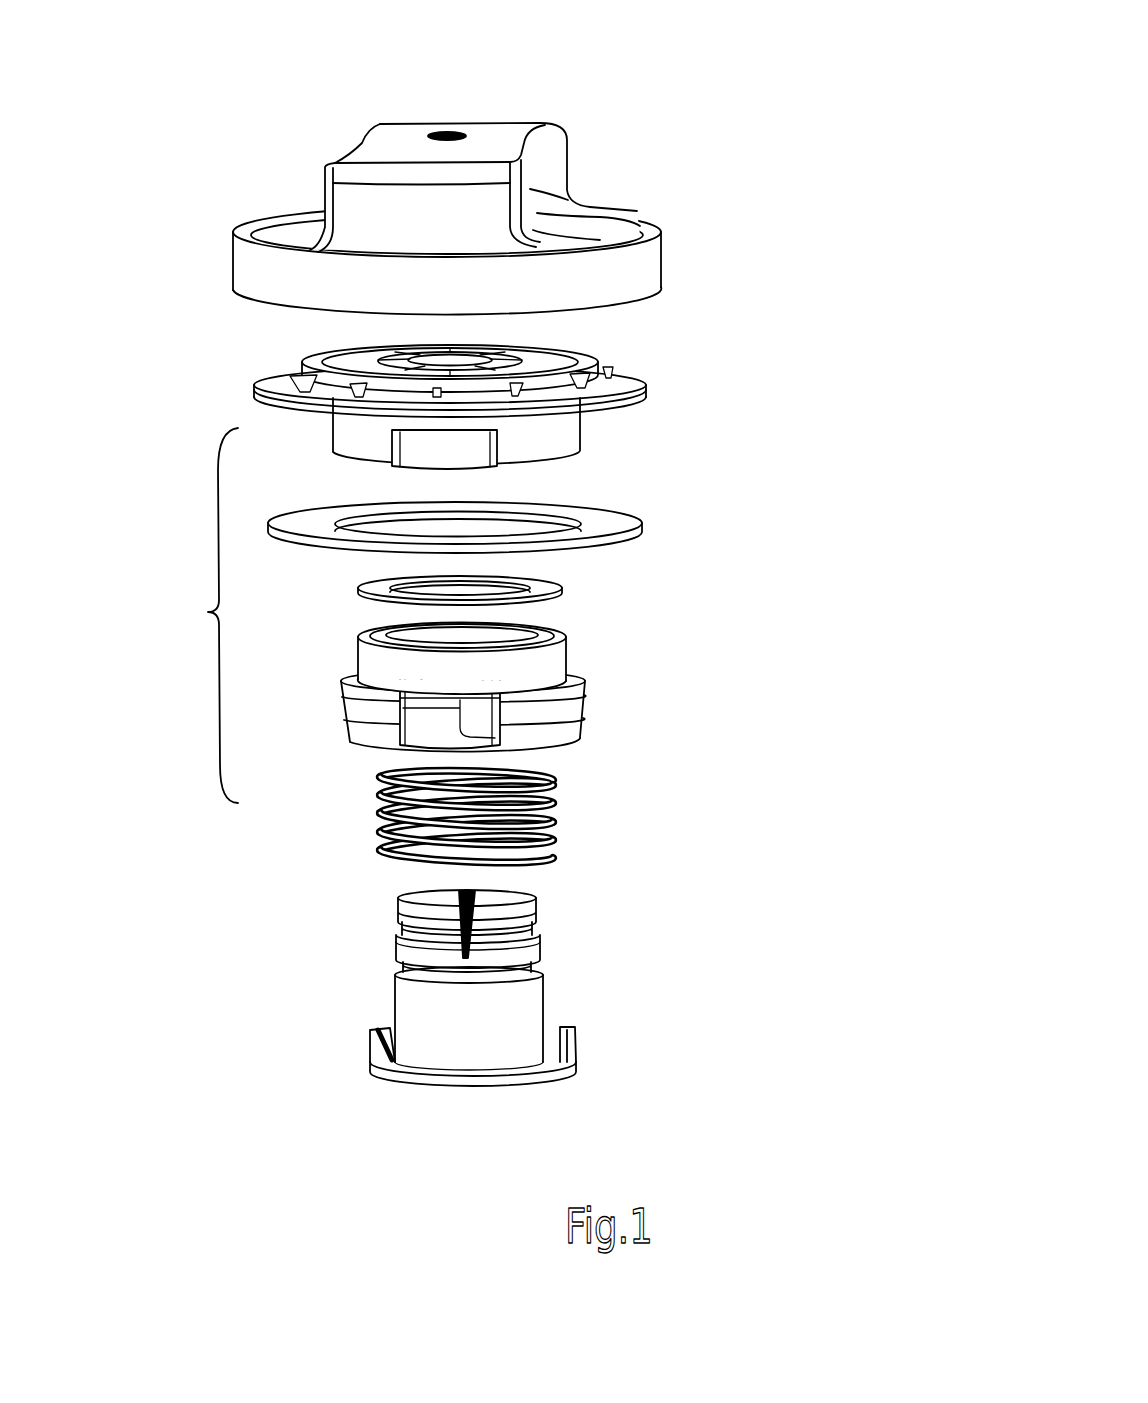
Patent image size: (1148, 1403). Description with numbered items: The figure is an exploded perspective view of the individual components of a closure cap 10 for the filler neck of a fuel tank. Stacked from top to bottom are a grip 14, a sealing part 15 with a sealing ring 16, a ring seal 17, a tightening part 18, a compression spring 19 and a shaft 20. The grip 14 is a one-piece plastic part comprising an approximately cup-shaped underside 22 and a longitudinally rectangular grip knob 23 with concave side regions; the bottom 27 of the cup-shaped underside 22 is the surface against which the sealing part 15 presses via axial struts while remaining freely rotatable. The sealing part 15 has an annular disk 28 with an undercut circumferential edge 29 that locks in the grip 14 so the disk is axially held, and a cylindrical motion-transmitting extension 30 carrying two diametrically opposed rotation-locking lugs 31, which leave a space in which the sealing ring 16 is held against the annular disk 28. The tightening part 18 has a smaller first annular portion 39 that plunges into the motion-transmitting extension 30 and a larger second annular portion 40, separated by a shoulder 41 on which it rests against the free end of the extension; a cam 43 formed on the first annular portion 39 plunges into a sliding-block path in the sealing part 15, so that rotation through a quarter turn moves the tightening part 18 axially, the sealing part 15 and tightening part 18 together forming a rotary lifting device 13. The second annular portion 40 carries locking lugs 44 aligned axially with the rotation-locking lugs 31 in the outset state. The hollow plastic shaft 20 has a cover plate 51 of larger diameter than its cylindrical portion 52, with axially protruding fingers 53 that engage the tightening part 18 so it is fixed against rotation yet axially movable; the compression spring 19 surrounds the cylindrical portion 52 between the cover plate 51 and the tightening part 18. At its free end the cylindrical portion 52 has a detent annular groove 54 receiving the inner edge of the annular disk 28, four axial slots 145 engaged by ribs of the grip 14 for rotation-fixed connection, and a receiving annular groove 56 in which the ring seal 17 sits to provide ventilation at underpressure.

The closure cap 10 is at (556, 598).
The grip 14 is at (538, 159).
The grip knob 23 is at (500, 128).
The bottom 27 is at (632, 214).
The cup-shaped underside 22 is at (655, 257).
The sealing part 15 is at (569, 395).
The annular disk 28 is at (634, 378).
The undercut circumferential edge 29 is at (647, 393).
The motion-transmitting extension 30 is at (488, 439).
The rotation-locking lugs 31 is at (400, 452).
The rotary lifting device 13 is at (202, 615).
The sealing ring 16 is at (634, 500).
The ring seal 17 is at (553, 590).
The tightening part 18 is at (553, 740).
The first annular portion 39 is at (545, 663).
The second annular portion 40 is at (512, 769).
The shoulder 41 is at (343, 672).
The cam 43 is at (413, 670).
The locking lugs 44 is at (560, 746).
The compression spring 19 is at (555, 835).
The shaft 20 is at (477, 1036).
The detent annular groove 54 is at (439, 923).
The axial slots 145 is at (397, 920).
The receiving annular groove 56 is at (397, 965).
The cylindrical portion 52 is at (557, 996).
The cover plate 51 is at (485, 1085).
The fingers 53 is at (372, 1040).